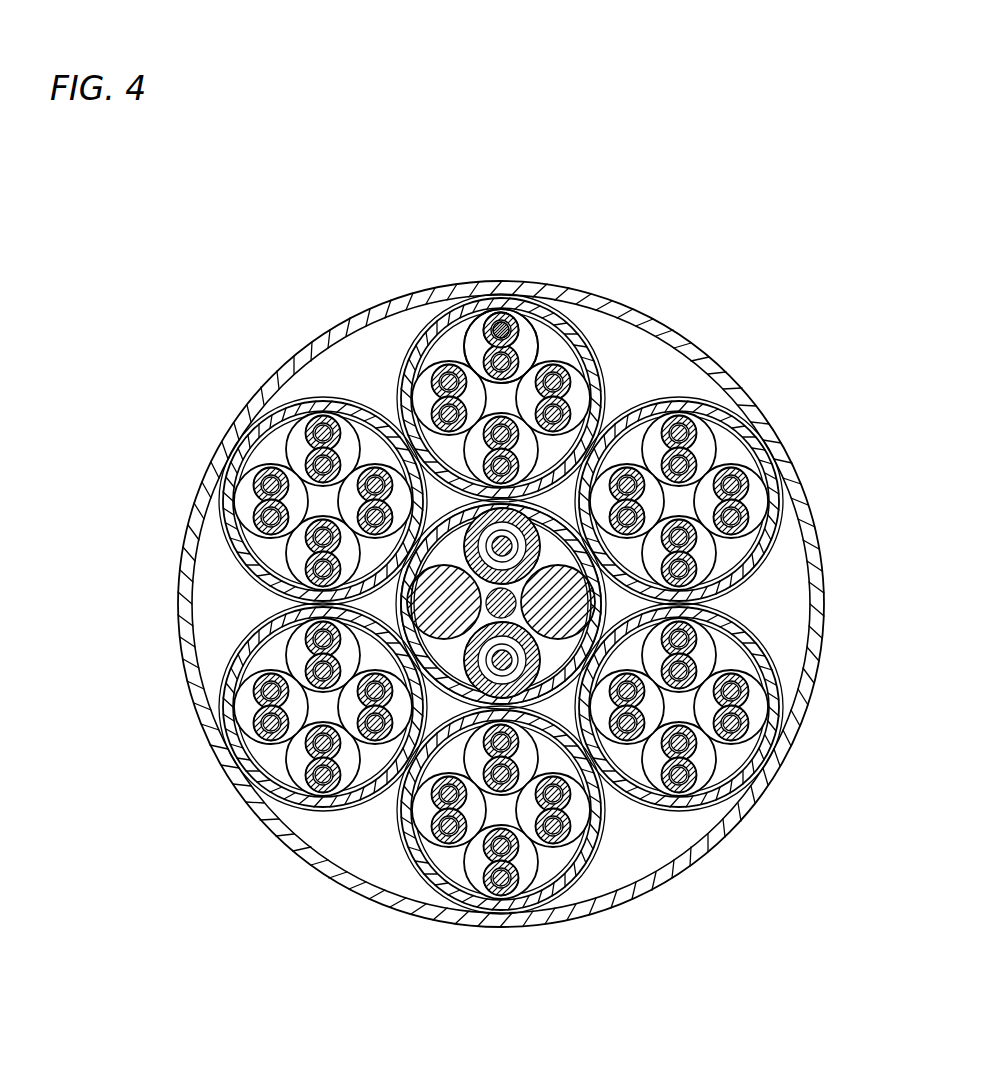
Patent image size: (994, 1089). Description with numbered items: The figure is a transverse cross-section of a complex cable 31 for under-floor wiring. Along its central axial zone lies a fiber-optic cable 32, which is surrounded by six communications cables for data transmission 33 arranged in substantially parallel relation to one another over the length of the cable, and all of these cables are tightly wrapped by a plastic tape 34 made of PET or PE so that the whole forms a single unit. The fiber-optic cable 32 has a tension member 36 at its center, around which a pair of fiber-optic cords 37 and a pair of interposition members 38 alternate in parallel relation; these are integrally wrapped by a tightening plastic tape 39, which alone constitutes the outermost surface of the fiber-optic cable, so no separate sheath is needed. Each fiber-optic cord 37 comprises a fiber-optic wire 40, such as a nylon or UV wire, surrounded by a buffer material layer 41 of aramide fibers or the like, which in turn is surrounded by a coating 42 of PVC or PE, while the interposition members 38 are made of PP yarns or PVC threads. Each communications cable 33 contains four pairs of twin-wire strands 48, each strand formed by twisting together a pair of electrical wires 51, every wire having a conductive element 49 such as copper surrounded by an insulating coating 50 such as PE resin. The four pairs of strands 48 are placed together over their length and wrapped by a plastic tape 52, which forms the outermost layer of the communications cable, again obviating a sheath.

The complex cable 31 is at (512, 577).
The fiber-optic cable 32 is at (501, 685).
The communications cable for data transmission 33 is at (570, 311).
The plastic tape 34 is at (812, 500).
The tension member 36 is at (373, 797).
The fiber-optic cord 37 is at (455, 546).
The interposition member 38 is at (422, 597).
The plastic tape 39 is at (607, 800).
The fiber-optic wire 40 is at (620, 460).
The buffer material layer 41 is at (592, 386).
The coating 42 is at (386, 435).
The twin-wire strand 48 is at (501, 577).
The conductive element 49 is at (480, 336).
The insulating coating 50 is at (528, 330).
The electrical wire 51 is at (553, 330).
The plastic tape 52 is at (408, 347).